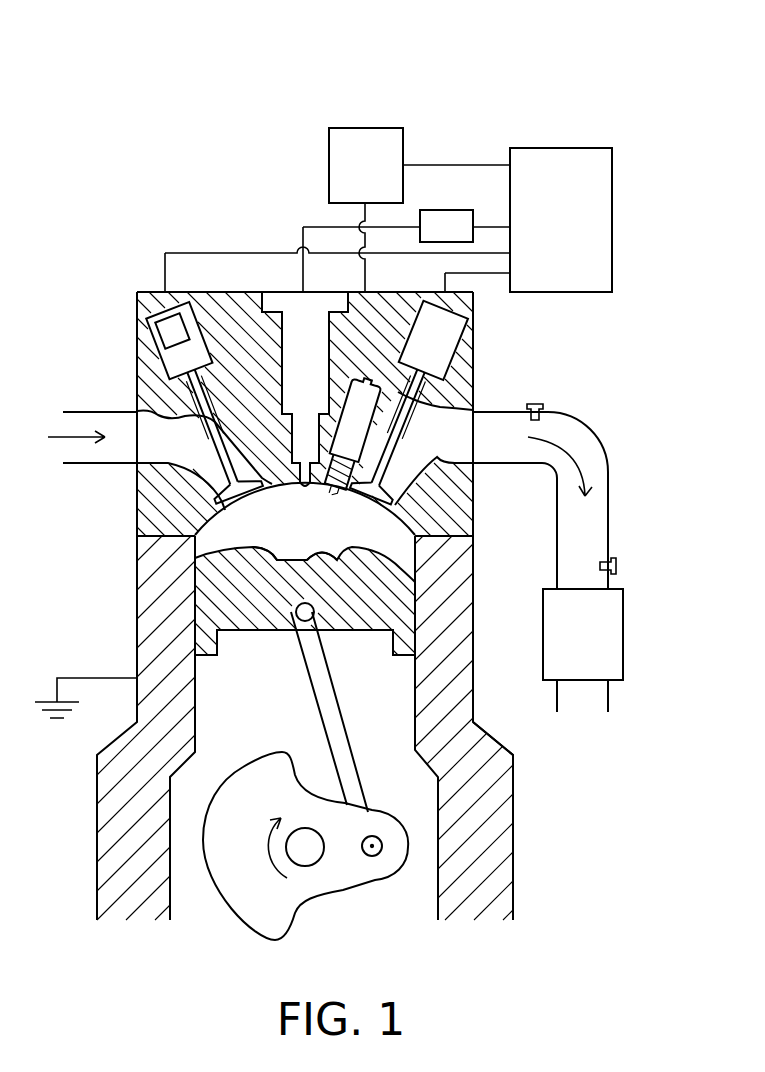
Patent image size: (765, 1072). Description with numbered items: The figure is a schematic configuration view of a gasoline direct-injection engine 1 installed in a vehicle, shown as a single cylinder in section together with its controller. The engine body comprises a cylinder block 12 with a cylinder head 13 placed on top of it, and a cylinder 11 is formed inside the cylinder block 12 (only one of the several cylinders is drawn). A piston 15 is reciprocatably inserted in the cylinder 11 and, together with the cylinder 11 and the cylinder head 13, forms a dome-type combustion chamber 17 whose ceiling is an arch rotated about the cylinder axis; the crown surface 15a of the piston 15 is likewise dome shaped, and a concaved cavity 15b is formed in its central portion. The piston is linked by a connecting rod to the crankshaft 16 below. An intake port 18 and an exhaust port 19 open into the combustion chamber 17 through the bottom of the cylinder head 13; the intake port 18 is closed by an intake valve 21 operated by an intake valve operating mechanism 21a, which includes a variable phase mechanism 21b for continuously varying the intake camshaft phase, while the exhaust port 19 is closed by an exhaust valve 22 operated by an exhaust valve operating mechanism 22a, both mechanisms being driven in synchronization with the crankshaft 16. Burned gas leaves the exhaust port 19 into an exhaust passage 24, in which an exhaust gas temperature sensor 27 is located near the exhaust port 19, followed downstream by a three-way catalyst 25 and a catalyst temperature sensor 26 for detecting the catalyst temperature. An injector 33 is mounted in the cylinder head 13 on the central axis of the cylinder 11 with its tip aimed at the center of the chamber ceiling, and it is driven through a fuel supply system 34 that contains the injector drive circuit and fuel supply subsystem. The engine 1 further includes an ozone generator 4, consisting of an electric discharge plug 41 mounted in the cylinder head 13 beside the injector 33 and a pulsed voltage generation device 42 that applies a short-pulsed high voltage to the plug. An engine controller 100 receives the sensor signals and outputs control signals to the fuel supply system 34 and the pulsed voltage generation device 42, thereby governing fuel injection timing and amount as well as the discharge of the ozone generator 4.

The gasoline direct-injection engine 1 is at (428, 85).
The ozone generator 4 is at (232, 170).
The cylinder 11 is at (196, 702).
The cylinder block 12 is at (513, 848).
The cylinder head 13 is at (474, 338).
The piston 15 is at (260, 622).
The crown surface 15a is at (200, 553).
The cavity 15b is at (338, 562).
The crankshaft 16 is at (313, 866).
The combustion chamber 17 is at (257, 533).
The intake port 18 is at (165, 414).
The exhaust port 19 is at (472, 472).
The intake valve 21 is at (188, 378).
The intake valve operating mechanism 21a is at (147, 316).
The variable phase mechanism 21b is at (157, 330).
The exhaust valve 22 is at (414, 395).
The exhaust valve operating mechanism 22a is at (458, 311).
The exhaust passage 24 is at (606, 520).
The three-way catalyst 25 is at (624, 626).
The catalyst temperature sensor 26 is at (618, 566).
The exhaust gas temperature sensor 27 is at (545, 405).
The injector 33 is at (293, 333).
The fuel supply system 34 is at (448, 210).
The electric discharge plug 41 is at (352, 386).
The pulsed voltage generation device 42 is at (327, 167).
The engine controller 100 is at (613, 219).